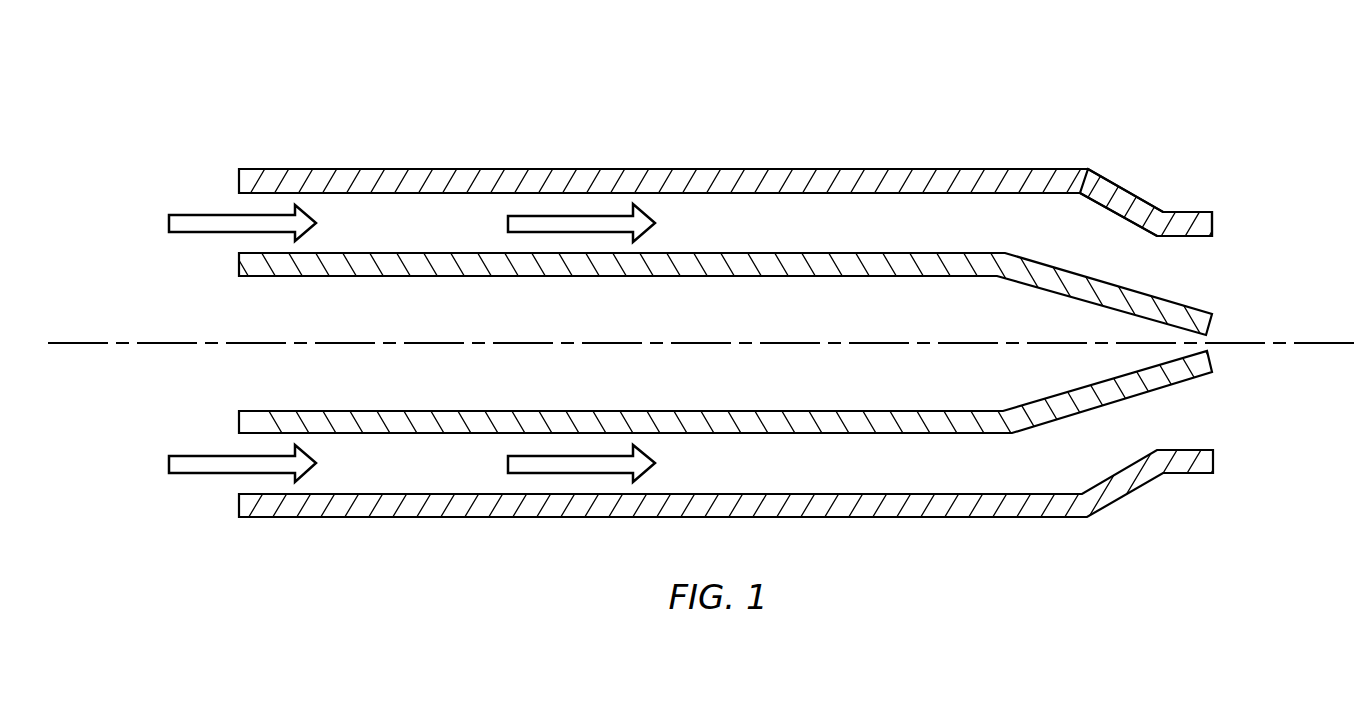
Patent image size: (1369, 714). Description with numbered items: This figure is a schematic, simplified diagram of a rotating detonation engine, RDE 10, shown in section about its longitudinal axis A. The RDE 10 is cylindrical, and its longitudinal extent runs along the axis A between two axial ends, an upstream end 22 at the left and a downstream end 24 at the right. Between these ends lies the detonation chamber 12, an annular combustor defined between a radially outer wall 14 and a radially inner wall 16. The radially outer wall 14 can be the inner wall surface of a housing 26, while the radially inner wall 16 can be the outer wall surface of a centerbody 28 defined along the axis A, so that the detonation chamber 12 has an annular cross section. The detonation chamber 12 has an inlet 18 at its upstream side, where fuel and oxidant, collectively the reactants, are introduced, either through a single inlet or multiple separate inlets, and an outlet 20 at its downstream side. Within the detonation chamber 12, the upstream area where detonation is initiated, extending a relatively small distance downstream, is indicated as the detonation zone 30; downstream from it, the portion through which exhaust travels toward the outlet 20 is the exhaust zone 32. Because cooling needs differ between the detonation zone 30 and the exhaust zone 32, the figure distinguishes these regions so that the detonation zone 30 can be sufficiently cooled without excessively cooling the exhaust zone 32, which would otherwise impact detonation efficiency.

The rotating detonation engine 10 is at (962, 97).
The detonation chamber 12 is at (496, 208).
The radially outer wall 14 is at (724, 168).
The radially inner wall 16 is at (875, 257).
The inlet 18 is at (232, 245).
The outlet 20 is at (1213, 279).
The upstream end 22 is at (57, 284).
The downstream end 24 is at (1353, 254).
The housing 26 is at (1064, 168).
The centerbody 28 is at (918, 410).
The detonation zone 30 is at (391, 216).
The exhaust zone 32 is at (805, 214).
The axis A is at (48, 345).